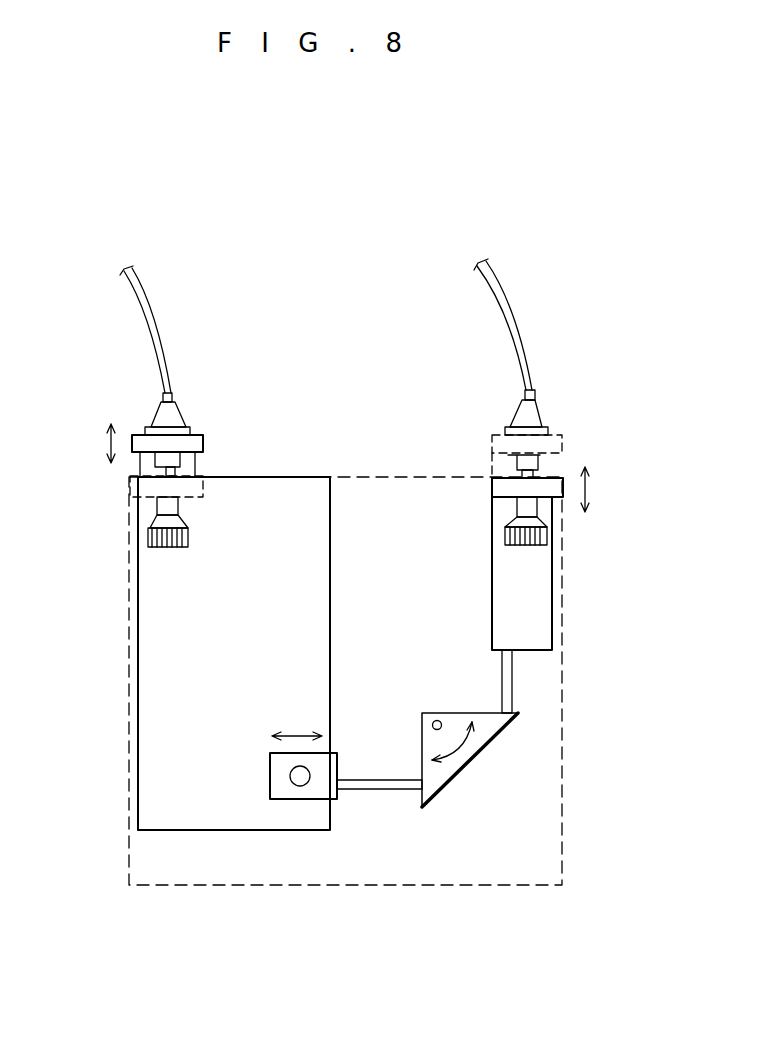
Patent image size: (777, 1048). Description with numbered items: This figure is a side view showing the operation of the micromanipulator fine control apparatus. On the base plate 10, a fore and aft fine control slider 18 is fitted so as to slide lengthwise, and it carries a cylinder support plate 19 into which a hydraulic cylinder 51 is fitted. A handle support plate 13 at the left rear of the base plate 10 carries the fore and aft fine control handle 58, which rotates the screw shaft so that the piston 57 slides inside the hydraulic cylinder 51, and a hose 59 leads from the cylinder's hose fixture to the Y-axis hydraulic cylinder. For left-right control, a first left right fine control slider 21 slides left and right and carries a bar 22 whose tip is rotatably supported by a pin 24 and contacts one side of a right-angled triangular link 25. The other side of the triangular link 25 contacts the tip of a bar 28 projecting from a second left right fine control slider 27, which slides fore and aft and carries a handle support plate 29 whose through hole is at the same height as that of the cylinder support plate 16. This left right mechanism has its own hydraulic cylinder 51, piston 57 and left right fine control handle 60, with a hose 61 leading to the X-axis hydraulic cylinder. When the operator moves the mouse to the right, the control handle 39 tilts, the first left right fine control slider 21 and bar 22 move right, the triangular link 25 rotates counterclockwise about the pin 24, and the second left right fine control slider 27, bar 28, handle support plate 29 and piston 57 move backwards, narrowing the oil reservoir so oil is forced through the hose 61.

The base plate 10 is at (560, 780).
The handle support plate 13 is at (130, 485).
The cylinder support plate 16 is at (563, 443).
The fore and aft fine control slider 18 is at (150, 637).
The cylinder support plate 19 is at (137, 442).
The first left right fine control slider 21 is at (312, 800).
The bar 22 is at (388, 790).
The pin 24 is at (435, 718).
The triangular link 25 is at (462, 770).
The second left right fine control slider 27 is at (547, 602).
The bar 28 is at (512, 670).
The handle support plate 29 is at (560, 490).
The control handle 39 is at (293, 783).
The hydraulic cylinder 51 is at (178, 420).
The piston 57 is at (172, 473).
The fore and aft fine control handle 58 is at (165, 546).
The hose 59 is at (158, 327).
The left right fine control handle 60 is at (533, 545).
The hose 61 is at (500, 300).